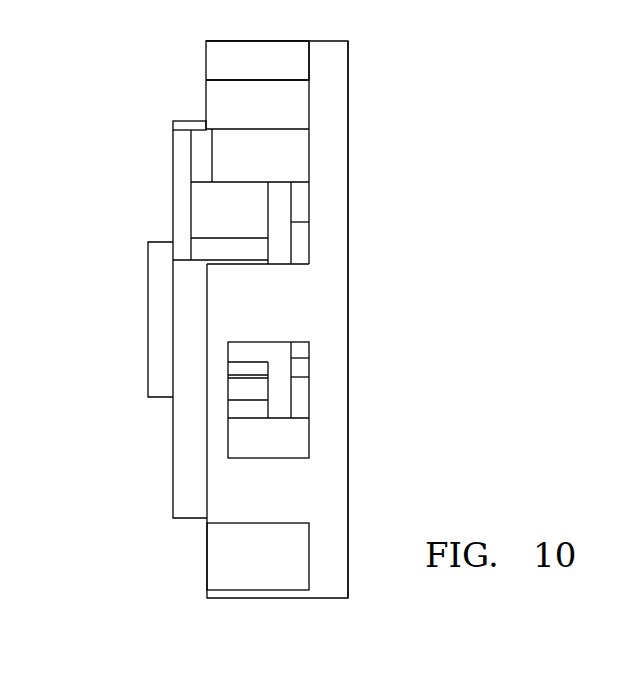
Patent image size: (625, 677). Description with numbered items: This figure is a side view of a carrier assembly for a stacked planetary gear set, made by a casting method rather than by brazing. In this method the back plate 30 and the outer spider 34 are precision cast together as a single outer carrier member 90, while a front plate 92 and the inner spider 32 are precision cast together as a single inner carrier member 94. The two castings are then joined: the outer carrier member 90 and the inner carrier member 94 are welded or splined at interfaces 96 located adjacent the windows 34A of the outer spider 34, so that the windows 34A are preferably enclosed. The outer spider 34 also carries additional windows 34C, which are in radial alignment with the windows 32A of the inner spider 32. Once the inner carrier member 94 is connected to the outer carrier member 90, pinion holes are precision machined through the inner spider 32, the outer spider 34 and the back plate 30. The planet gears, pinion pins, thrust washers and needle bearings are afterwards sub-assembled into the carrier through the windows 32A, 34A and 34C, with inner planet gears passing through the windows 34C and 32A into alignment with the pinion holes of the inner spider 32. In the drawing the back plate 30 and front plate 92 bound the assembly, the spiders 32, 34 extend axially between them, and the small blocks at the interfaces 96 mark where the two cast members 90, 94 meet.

The back plate 30 is at (330, 240).
The inner spider 32 is at (252, 347).
The windows 32A is at (263, 405).
The outer spider 34 is at (348, 72).
The windows 34A is at (280, 344).
The windows 34C is at (308, 157).
The outer carrier member 90 is at (348, 213).
The front plate 92 is at (180, 482).
The inner carrier member 94 is at (162, 386).
The interfaces 96 is at (203, 120).